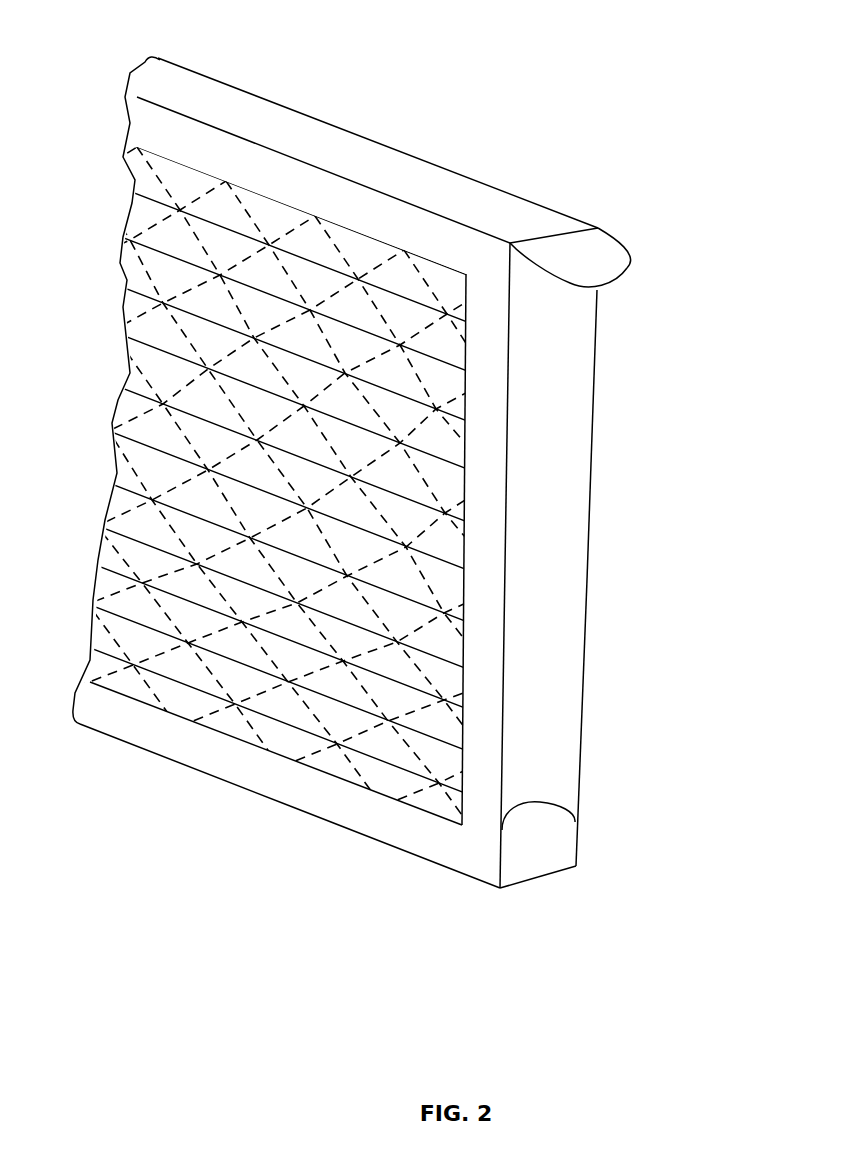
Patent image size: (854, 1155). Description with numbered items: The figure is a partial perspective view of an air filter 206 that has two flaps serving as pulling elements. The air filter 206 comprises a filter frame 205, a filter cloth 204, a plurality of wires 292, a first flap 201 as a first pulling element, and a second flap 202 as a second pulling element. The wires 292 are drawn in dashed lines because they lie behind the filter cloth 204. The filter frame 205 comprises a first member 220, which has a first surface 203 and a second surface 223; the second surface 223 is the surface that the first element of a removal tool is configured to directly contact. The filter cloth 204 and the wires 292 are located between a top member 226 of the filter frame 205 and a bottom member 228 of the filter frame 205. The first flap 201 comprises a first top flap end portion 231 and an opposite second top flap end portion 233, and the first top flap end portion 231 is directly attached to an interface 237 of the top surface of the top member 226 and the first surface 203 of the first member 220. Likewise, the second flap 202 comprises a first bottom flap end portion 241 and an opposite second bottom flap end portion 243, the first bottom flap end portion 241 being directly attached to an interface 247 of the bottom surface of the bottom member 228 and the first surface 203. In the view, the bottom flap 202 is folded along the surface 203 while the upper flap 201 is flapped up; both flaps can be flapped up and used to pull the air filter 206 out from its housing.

The air filter 206 is at (470, 104).
The first flap 201 is at (597, 258).
The second flap 202 is at (545, 840).
The first surface 203 is at (562, 542).
The filter cloth 204 is at (177, 697).
The filter frame 205 is at (258, 793).
The first member 220 is at (557, 707).
The second surface 223 is at (455, 300).
The top member 226 is at (363, 158).
The bottom member 228 is at (315, 800).
The first top flap end portion 231 is at (570, 252).
The second top flap end portion 233 is at (598, 278).
The interface 237 is at (537, 224).
The first bottom flap end portion 241 is at (529, 872).
The second bottom flap end portion 243 is at (547, 817).
The interface 247 is at (559, 896).
The plurality of wires 292 is at (132, 410).